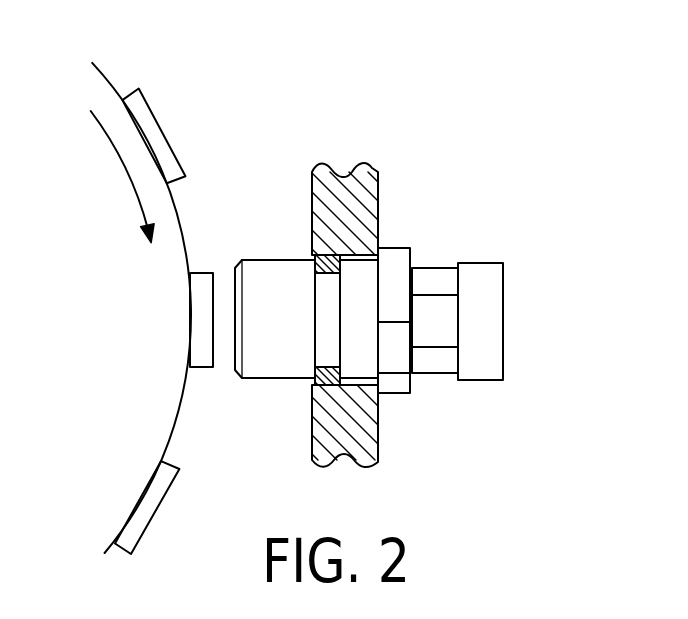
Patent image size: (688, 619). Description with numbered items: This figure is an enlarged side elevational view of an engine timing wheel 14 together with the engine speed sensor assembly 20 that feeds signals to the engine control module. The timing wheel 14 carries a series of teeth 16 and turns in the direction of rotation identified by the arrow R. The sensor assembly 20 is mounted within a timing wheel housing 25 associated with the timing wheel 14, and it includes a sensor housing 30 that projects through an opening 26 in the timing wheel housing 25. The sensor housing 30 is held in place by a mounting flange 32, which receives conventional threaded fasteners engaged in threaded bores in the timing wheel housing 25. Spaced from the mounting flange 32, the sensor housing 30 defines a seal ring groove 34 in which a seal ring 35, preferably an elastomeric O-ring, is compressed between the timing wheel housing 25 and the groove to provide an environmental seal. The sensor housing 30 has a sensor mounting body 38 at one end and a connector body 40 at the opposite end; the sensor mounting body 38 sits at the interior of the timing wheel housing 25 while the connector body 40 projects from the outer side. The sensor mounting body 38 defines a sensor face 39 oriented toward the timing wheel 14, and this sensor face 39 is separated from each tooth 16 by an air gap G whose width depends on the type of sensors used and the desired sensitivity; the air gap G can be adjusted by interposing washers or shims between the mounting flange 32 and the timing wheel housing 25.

The timing wheel 14 is at (108, 76).
The tooth 16 is at (196, 270).
The arrow indicating direction of rotation R is at (122, 158).
The air gap G is at (213, 400).
The sensor face 39 is at (235, 268).
The sensor mounting body 38 is at (273, 273).
The seal ring groove 34 is at (327, 317).
The seal ring 35 is at (315, 360).
The timing wheel housing 25 is at (368, 172).
The opening 26 is at (380, 395).
The sensor assembly 20 is at (402, 232).
The sensor housing 30 is at (402, 395).
The mounting flange 32 is at (398, 380).
The connector body 40 is at (493, 300).